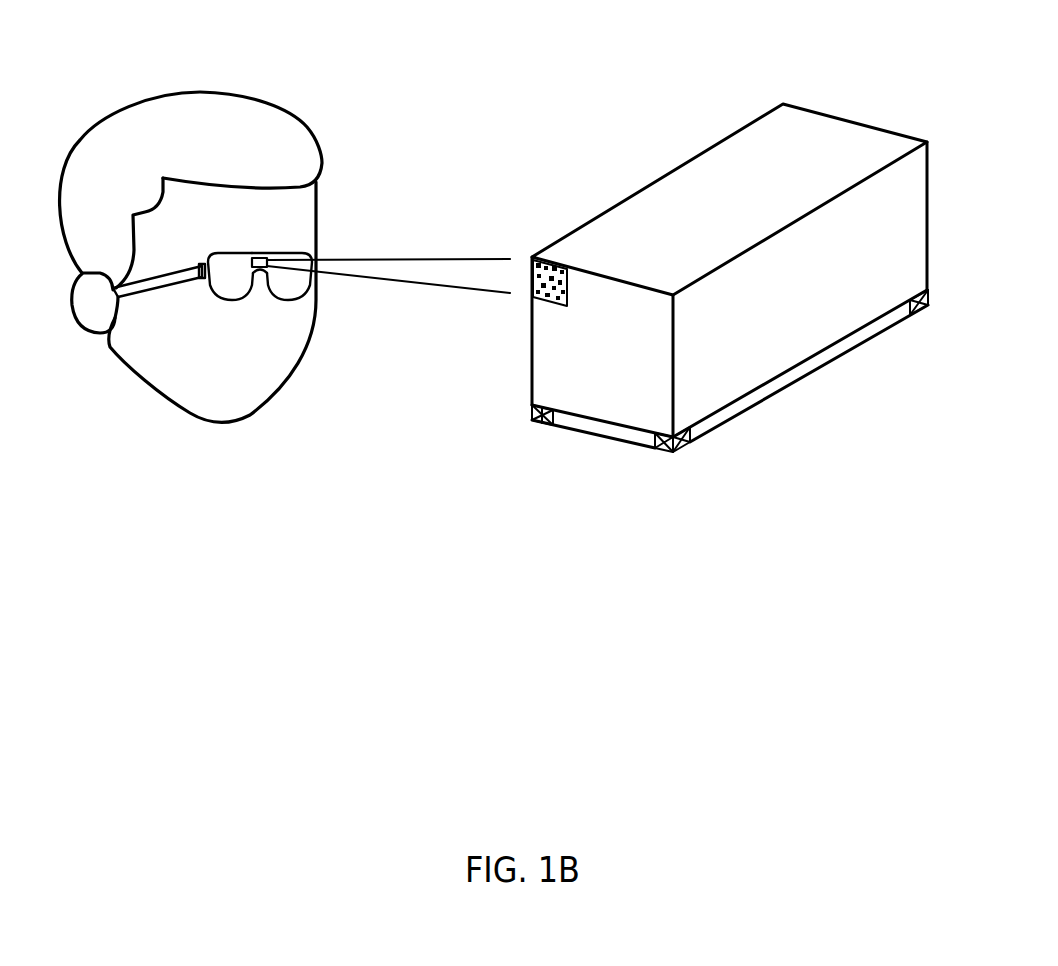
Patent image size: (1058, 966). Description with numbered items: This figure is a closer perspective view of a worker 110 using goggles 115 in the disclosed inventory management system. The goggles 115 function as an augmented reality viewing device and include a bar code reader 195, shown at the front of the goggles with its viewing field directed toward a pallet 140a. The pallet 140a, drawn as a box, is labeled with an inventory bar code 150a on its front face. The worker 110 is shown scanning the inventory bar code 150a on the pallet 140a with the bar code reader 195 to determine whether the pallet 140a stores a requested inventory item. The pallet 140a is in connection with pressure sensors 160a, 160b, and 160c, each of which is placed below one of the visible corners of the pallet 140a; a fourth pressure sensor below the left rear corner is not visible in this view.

The worker 110 is at (205, 123).
The goggles 115 is at (227, 288).
The bar code reader 195 is at (263, 260).
The pallet 140a is at (783, 205).
The inventory bar code 150a is at (533, 298).
The pressure sensor 160a is at (535, 422).
The pressure sensor 160b is at (668, 457).
The pressure sensor 160c is at (923, 312).